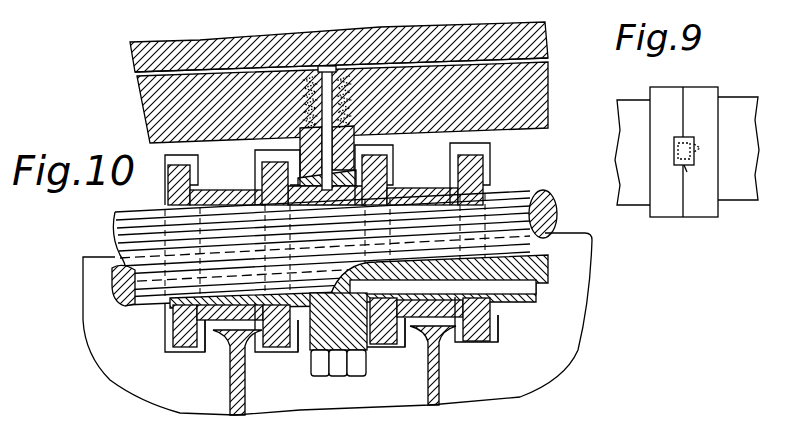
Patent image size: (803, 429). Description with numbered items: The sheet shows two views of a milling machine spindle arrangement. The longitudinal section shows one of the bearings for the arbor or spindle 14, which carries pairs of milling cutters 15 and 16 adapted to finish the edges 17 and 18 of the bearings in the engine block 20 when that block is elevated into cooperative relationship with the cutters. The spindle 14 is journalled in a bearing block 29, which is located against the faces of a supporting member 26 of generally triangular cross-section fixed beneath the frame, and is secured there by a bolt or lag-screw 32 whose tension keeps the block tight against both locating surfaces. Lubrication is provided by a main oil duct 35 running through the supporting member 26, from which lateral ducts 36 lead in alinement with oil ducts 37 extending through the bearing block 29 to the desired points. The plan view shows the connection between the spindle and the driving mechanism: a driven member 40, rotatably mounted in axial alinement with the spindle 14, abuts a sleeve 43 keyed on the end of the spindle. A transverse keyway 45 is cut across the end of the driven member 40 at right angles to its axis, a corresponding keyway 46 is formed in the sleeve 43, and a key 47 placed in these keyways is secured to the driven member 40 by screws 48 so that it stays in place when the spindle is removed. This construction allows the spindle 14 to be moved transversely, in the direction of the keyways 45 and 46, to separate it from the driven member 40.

In FIG. 10, the spindle 14 is at (550, 211).
In FIG. 10, the milling cutter 15 is at (174, 322).
In FIG. 10, the milling cutter 16 is at (288, 348).
In FIG. 10, the bearing edge 17 is at (212, 352).
In FIG. 10, the bearing edge 18 is at (256, 340).
In FIG. 10, the engine block 20 is at (591, 330).
In FIG. 10, the supporting member 26 is at (140, 40).
In FIG. 10, the bearing block 29 is at (370, 149).
In FIG. 10, the bolt 32 is at (345, 376).
In FIG. 10, the oil duct 35 is at (135, 76).
In FIG. 10, the lateral duct 36 is at (330, 68).
In FIG. 10, the oil duct 37 is at (295, 145).
In FIG. 9, the driven member 40 is at (706, 92).
In FIG. 9, the sleeve 43 is at (660, 95).
In FIG. 9, the keyway 45 is at (692, 140).
In FIG. 9, the keyway 46 is at (676, 140).
In FIG. 9, the key 47 is at (698, 178).
In FIG. 9, the screw 48 is at (706, 150).